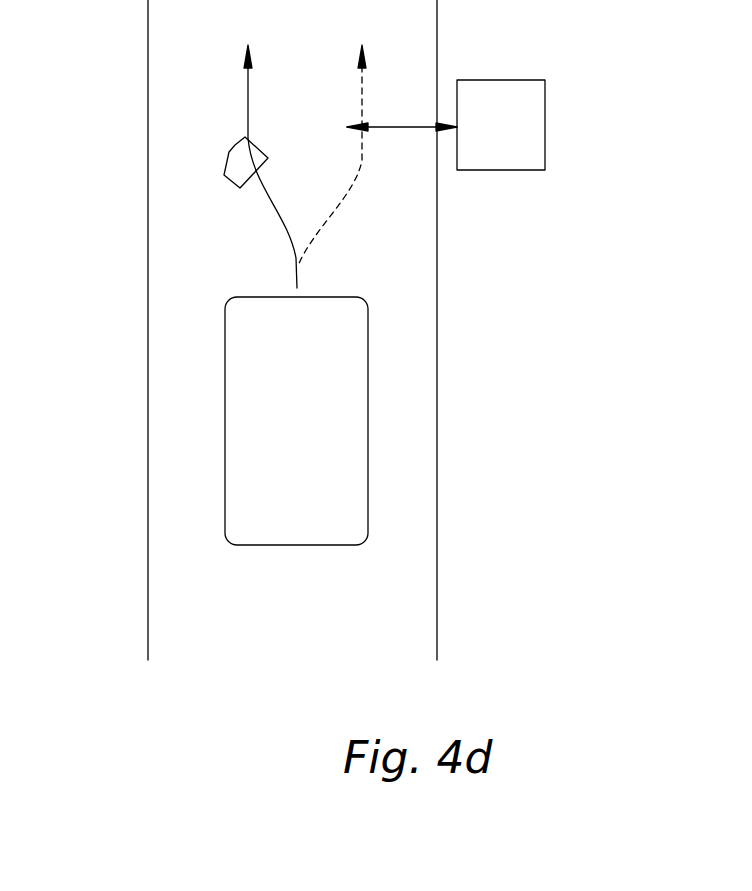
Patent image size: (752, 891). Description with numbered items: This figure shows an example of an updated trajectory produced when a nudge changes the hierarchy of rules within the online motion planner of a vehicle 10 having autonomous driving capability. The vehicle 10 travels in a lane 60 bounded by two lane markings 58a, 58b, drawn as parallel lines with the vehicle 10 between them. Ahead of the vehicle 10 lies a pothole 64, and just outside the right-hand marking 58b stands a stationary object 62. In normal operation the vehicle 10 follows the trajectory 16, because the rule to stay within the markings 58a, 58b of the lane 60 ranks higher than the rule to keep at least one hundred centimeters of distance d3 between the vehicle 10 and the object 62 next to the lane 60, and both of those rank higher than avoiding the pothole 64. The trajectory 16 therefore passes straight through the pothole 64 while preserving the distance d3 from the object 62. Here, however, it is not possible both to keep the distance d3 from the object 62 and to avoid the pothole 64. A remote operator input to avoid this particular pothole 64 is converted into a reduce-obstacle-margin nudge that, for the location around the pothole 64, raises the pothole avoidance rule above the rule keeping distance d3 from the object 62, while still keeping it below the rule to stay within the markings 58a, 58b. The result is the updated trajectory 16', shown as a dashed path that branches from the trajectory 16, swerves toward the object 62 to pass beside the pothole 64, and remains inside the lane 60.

The vehicle 10 is at (342, 503).
The trajectory 16 is at (189, 166).
The updated trajectory 16' is at (347, 155).
The lane marking 58a is at (148, 591).
The lane marking 58b is at (437, 590).
The lane 60 is at (251, 630).
The object 62 is at (530, 136).
The pothole 64 is at (235, 177).
The distance d3 is at (402, 109).